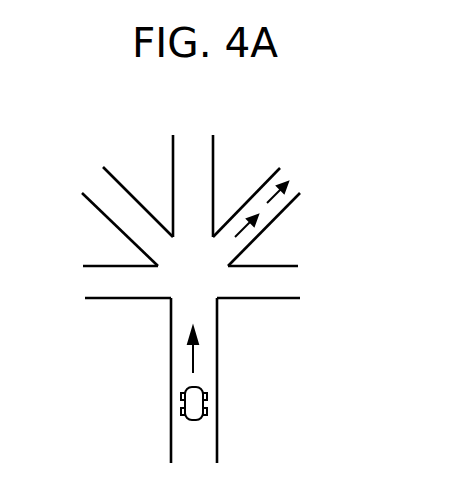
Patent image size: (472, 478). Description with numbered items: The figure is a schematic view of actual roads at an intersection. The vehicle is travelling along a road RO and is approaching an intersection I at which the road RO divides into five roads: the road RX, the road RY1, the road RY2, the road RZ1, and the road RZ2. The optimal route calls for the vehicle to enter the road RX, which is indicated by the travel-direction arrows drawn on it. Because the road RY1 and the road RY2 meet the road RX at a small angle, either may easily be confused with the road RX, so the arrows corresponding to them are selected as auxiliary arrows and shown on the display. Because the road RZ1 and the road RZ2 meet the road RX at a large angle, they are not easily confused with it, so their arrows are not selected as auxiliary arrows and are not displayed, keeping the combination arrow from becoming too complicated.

The road RY1 is at (213, 172).
The road RZ1 is at (135, 198).
The road RZ2 is at (93, 266).
The road RX is at (255, 193).
The road RY2 is at (295, 266).
The road RO is at (171, 365).
The intersection I is at (217, 333).